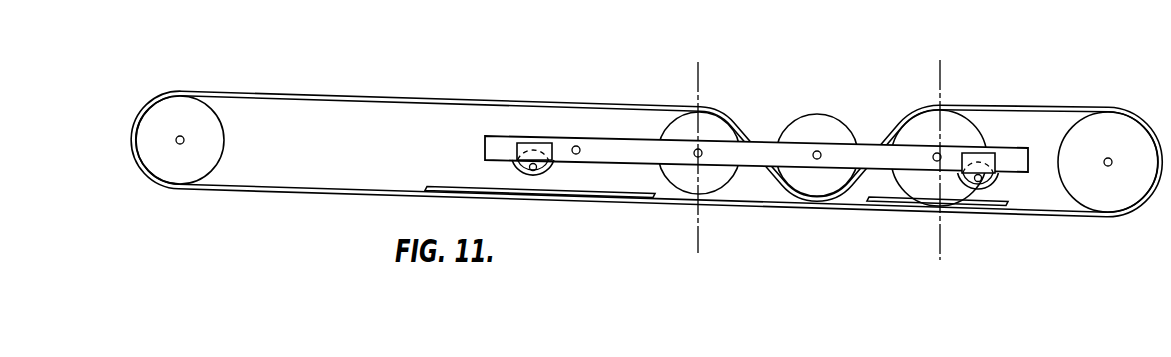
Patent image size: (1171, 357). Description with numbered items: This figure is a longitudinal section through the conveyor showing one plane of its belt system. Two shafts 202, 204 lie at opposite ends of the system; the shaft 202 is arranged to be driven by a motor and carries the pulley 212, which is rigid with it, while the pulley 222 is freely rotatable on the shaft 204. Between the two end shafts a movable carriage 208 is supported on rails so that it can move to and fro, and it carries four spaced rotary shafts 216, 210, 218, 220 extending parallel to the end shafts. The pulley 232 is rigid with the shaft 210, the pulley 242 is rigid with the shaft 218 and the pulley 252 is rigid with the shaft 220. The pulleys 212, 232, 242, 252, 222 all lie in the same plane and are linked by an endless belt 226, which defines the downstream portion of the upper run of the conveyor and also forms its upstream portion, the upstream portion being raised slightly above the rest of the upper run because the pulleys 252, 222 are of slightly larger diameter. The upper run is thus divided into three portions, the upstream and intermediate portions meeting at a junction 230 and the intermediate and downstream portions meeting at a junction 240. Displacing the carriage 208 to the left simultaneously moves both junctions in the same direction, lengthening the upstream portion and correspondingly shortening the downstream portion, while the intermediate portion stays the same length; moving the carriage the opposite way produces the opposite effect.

The shaft 202 is at (178, 146).
The shaft 204 is at (1105, 166).
The movable carriage 208 is at (485, 147).
The rotary shaft 210 is at (695, 158).
The pulley 212 is at (157, 110).
The rotary shaft 216 is at (574, 155).
The rotary shaft 218 is at (815, 160).
The rotary shaft 220 is at (935, 162).
The pulley 222 is at (1093, 133).
The endless belt 226 is at (363, 97).
The junction 230 is at (934, 149).
The pulley 232 is at (692, 117).
The junction 240 is at (696, 146).
The pulley 242 is at (803, 122).
The pulley 252 is at (917, 122).